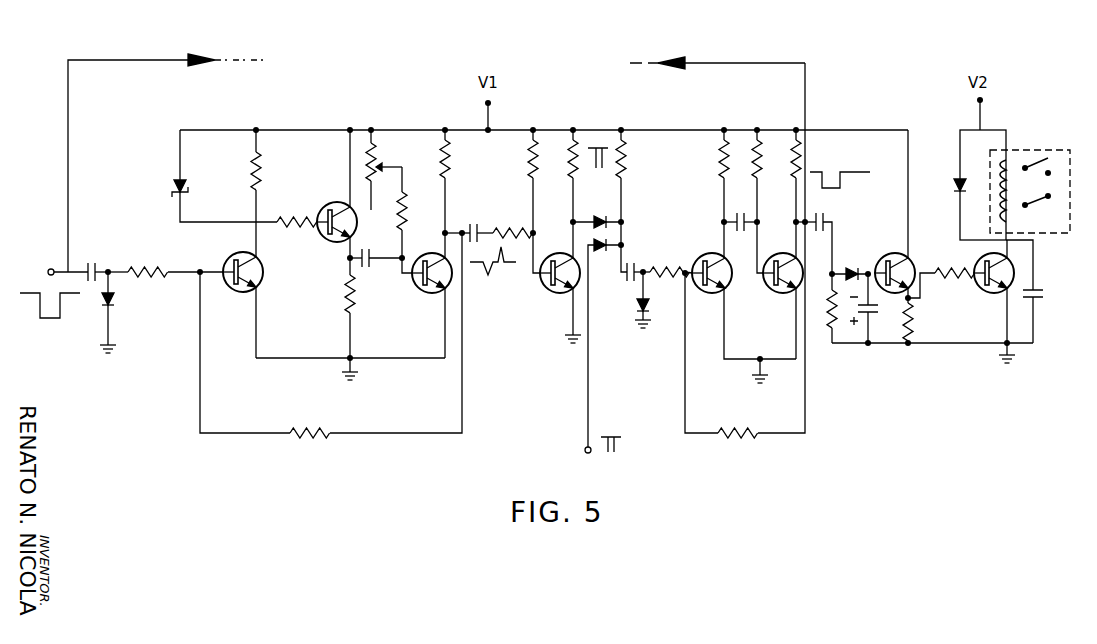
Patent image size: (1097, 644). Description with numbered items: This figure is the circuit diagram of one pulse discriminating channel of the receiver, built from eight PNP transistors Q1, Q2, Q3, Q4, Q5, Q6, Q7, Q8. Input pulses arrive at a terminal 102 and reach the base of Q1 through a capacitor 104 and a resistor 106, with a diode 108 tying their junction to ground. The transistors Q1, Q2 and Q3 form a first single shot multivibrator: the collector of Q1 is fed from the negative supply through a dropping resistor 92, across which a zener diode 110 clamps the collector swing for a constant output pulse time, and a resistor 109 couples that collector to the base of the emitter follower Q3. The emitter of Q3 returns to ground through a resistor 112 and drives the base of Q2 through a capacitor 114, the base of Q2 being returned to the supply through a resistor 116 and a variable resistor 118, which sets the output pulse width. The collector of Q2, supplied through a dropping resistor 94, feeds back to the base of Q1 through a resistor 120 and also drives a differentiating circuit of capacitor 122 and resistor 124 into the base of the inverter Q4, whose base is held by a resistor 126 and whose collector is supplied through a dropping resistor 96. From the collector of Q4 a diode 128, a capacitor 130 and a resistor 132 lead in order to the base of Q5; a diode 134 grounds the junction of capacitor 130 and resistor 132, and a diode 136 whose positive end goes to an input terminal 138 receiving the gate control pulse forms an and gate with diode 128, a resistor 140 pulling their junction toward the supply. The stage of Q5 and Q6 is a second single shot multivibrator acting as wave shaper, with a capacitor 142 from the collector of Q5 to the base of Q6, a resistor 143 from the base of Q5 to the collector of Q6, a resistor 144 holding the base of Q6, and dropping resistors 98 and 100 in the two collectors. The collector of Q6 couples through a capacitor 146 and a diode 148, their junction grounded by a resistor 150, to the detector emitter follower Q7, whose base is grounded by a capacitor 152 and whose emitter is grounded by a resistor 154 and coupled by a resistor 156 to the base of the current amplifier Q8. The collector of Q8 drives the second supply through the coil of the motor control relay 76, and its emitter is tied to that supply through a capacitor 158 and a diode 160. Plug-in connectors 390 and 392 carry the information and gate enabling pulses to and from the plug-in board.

The plug-in connector 390 is at (184, 58).
The plug-in connector 392 is at (688, 62).
The terminal 102 is at (48, 268).
The capacitor 104 is at (86, 262).
The resistor 106 is at (157, 274).
The diode 108 is at (112, 308).
The zener diode 110 is at (170, 188).
The dropping resistor 92 is at (252, 178).
The resistor 109 is at (292, 224).
The resistor 112 is at (344, 290).
The capacitor 114 is at (372, 265).
The resistor 116 is at (402, 214).
The variable resistor 118 is at (376, 160).
The resistor 120 is at (314, 430).
The dropping resistor 94 is at (450, 157).
The capacitor 122 is at (488, 222).
The resistor 124 is at (510, 232).
The resistor 126 is at (528, 155).
The dropping resistor 96 is at (572, 165).
The diode 128 is at (594, 222).
The capacitor 130 is at (648, 251).
The resistor 132 is at (669, 266).
The diode 134 is at (655, 310).
The diode 136 is at (600, 260).
The input terminal 138 is at (584, 451).
The resistor 140 is at (624, 159).
The capacitor 142 is at (734, 214).
The resistor 143 is at (780, 412).
The resistor 144 is at (766, 150).
The dropping resistor 98 is at (718, 159).
The dropping resistor 100 is at (795, 175).
The capacitor 146 is at (826, 220).
The diode 148 is at (866, 252).
The resistor 150 is at (842, 330).
The capacitor 152 is at (888, 328).
The resistor 154 is at (914, 320).
The resistor 156 is at (964, 270).
The capacitor 158 is at (1046, 296).
The diode 160 is at (953, 186).
The motor control relay 76 is at (1080, 120).
The transistor Q1 is at (258, 288).
The transistor Q2 is at (428, 290).
The transistor Q3 is at (345, 197).
The transistor Q4 is at (546, 287).
The transistor Q5 is at (697, 282).
The transistor Q6 is at (766, 282).
The transistor Q7 is at (901, 253).
The transistor Q8 is at (992, 292).